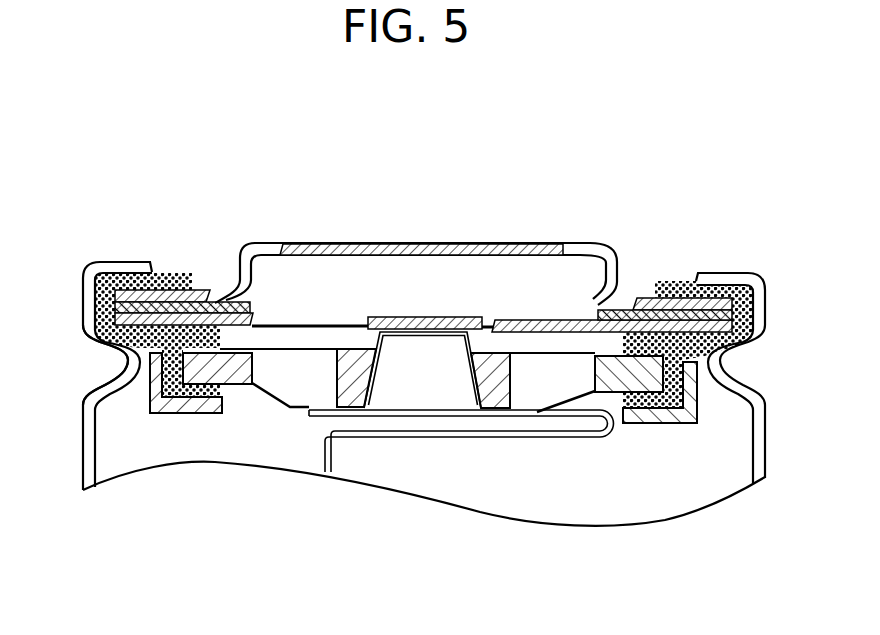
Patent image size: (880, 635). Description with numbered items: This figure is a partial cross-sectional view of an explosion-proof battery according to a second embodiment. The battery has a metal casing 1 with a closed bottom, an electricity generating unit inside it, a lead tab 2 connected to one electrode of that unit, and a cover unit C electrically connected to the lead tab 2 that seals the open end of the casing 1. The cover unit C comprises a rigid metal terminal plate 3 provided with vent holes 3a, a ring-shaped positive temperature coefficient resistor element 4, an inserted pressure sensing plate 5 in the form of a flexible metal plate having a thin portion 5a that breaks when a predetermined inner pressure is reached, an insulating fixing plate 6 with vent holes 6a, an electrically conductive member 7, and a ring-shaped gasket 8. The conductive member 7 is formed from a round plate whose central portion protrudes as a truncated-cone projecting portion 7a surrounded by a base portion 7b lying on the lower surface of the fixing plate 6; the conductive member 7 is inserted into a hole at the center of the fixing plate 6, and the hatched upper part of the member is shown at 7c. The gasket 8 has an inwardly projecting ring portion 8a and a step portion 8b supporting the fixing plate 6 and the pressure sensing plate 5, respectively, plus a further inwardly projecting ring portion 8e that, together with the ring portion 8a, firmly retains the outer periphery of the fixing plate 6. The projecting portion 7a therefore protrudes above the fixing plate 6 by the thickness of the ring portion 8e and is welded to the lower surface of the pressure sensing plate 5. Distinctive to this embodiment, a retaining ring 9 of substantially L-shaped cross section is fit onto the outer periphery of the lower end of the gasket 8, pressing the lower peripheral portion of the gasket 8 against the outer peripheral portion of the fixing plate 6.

The metal casing 1 is at (118, 250).
The lead tab 2 is at (576, 447).
The terminal plate 3 is at (514, 235).
The vent holes 3a is at (270, 247).
The positive temperature coefficient resistor element 4 is at (631, 301).
The inserted pressure sensing plate 5 is at (586, 306).
The thin portion 5a is at (348, 325).
The fixing plate 6 is at (295, 396).
The vent holes 6a is at (259, 388).
The electrically conductive member 7 is at (512, 362).
The projecting portion 7a is at (373, 407).
The base portion 7b is at (497, 408).
The top portion of metal plate 7c is at (430, 317).
The gasket 8 is at (186, 260).
The inwardly projecting ring portion 8a is at (197, 413).
The step portion 8b is at (120, 348).
The inwardly projecting ring portion 8e is at (214, 292).
The retaining ring 9 is at (145, 411).
The cover unit C is at (668, 238).